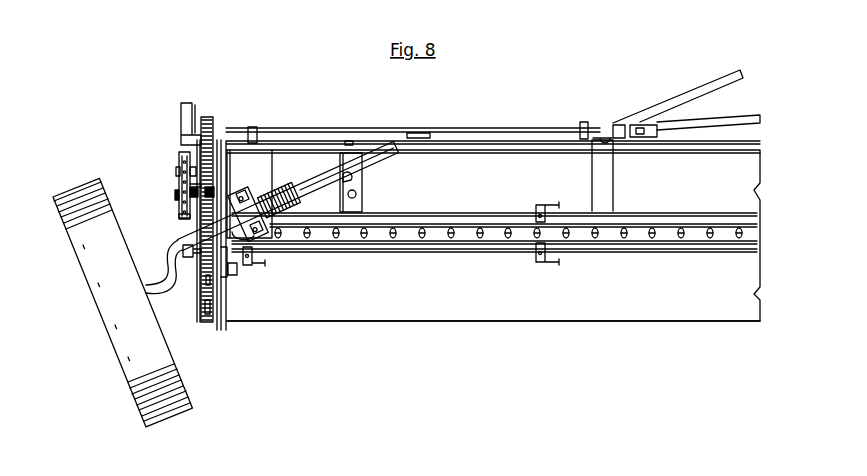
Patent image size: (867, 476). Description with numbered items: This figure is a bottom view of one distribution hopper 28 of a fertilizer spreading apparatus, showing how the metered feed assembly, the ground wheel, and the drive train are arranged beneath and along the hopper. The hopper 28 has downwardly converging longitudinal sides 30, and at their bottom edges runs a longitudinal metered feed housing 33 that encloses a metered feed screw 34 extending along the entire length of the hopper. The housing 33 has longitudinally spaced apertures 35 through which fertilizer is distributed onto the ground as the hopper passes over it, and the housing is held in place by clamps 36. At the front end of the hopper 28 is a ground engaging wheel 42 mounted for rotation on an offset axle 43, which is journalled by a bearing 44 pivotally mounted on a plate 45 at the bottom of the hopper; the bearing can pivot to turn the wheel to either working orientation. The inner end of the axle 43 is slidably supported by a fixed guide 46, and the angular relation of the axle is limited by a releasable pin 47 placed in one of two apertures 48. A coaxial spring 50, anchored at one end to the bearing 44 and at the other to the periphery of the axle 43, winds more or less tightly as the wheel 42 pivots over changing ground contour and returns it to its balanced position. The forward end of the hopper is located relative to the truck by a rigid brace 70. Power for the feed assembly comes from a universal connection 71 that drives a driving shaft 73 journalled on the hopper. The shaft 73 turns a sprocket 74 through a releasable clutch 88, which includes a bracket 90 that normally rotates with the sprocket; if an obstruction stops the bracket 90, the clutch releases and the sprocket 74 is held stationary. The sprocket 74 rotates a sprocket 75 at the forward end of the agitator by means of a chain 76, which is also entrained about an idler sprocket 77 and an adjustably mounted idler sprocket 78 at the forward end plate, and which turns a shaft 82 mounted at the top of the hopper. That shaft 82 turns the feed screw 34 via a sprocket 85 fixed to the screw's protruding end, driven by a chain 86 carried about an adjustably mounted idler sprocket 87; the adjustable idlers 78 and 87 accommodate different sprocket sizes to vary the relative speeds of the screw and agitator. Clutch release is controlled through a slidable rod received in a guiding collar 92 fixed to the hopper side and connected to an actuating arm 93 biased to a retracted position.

The distribution hopper 28 is at (388, 323).
The longitudinal sides 30 is at (535, 181).
The metered feed housing 33 is at (463, 240).
The metered feed screw 34 is at (392, 240).
The apertures 35 is at (335, 240).
The clamps 36 is at (548, 206).
The ground engaging wheel 42 is at (138, 321).
The offset axle 43 is at (160, 248).
The bearing 44 is at (246, 190).
The plate 45 is at (272, 185).
The fixed guide 46 is at (363, 206).
The releasable pin 47 is at (355, 176).
The apertures 48 is at (347, 194).
The coaxial spring 50 is at (290, 188).
The rigid brace 70 is at (662, 110).
The universal connection 71 is at (707, 121).
The driving shaft 73 is at (512, 130).
The sprocket 74 is at (214, 128).
The sprocket 75 is at (178, 183).
The chain 76 is at (203, 276).
The idler sprocket 77 is at (204, 266).
The adjustably mounted idler sprocket 78 is at (205, 316).
The shaft 82 is at (175, 195).
The sprocket 85 is at (177, 218).
The chain 86 is at (178, 162).
The adjustably mounted idler sprocket 87 is at (178, 154).
The releasable clutch 88 is at (195, 120).
The bracket 90 is at (182, 112).
The guiding collar 92 is at (300, 140).
The actuating arm 93 is at (413, 133).